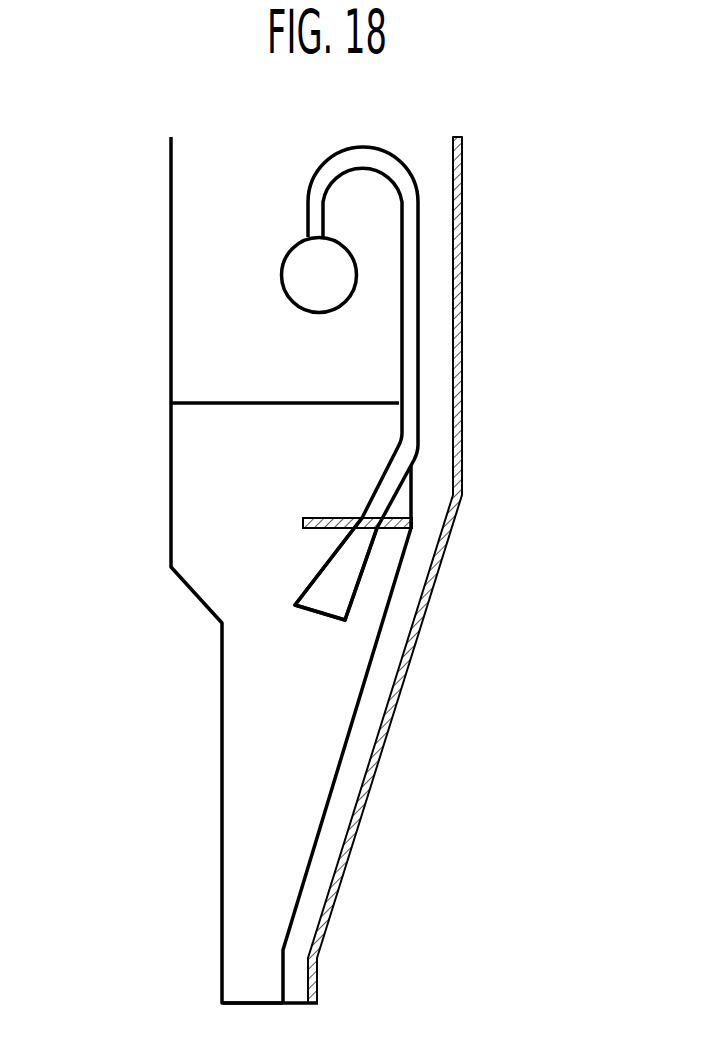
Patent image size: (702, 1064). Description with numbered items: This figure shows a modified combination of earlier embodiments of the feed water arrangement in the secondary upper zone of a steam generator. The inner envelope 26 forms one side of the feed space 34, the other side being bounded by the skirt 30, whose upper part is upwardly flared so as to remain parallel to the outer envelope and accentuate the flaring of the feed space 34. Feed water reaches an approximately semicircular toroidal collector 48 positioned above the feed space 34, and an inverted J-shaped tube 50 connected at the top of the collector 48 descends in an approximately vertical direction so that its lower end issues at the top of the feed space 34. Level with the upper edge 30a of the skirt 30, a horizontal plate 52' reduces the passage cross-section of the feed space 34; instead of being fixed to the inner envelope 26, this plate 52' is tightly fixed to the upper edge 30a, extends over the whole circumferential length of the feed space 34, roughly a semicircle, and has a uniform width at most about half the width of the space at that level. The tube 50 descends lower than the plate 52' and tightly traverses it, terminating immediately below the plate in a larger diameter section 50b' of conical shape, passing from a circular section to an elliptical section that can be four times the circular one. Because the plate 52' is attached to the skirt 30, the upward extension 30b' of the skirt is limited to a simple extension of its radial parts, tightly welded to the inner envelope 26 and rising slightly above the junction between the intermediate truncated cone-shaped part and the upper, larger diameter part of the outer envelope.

The inner envelope 26 is at (222, 770).
The skirt 30 is at (337, 777).
The upper edge of skirt 30a is at (413, 522).
The upward extension 30b' is at (227, 452).
The feed space 34 is at (272, 888).
The toroidal collector 48 is at (281, 290).
The inverted J-shaped tube 50 is at (413, 308).
The larger diameter section 50b' is at (408, 607).
The horizontal plate 52' is at (424, 557).